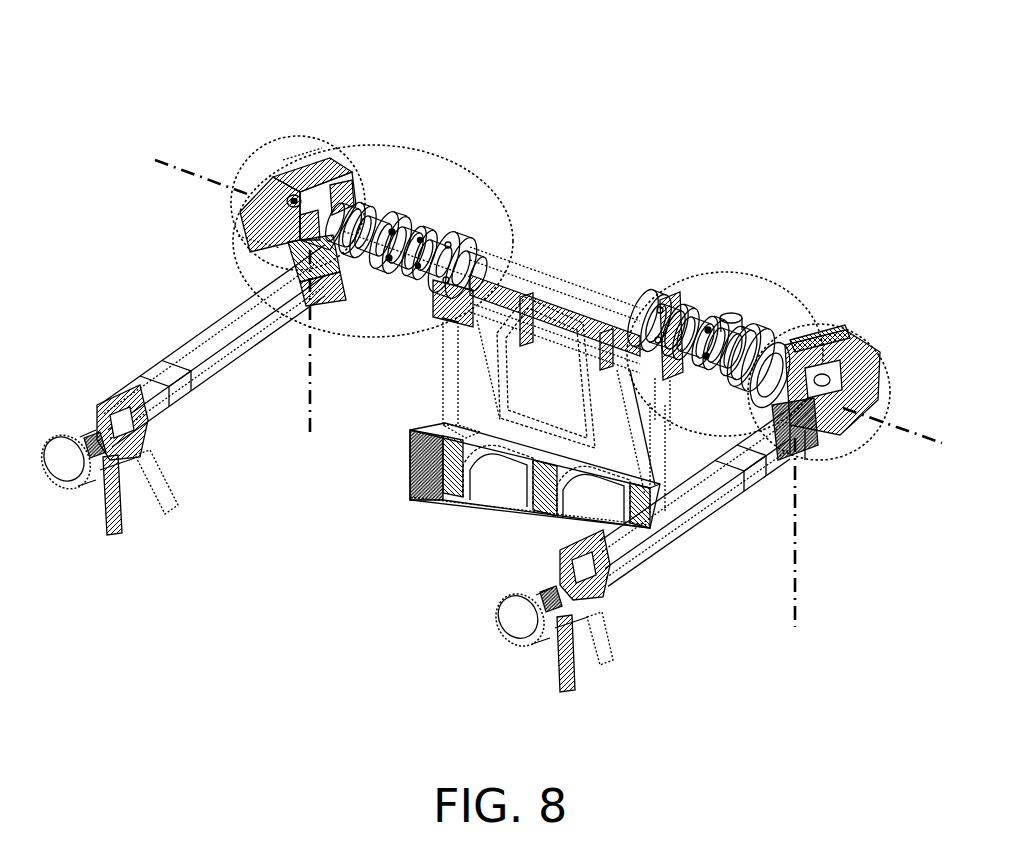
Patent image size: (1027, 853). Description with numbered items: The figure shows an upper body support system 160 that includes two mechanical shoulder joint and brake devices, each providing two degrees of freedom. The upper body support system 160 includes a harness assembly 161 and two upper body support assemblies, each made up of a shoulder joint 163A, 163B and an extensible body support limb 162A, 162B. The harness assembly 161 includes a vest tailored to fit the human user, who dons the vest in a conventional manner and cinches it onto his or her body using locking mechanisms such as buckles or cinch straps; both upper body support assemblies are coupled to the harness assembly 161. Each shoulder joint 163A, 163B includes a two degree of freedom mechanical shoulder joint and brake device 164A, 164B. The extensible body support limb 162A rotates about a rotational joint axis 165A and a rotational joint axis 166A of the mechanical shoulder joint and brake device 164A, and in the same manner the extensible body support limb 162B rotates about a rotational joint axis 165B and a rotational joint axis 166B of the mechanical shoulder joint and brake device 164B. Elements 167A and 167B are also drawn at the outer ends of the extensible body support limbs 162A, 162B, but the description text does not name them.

The upper body support system 160 is at (125, 56).
The harness assembly 161 is at (410, 470).
The extensible body support limb 162A is at (180, 350).
The extensible body support limb 162B is at (697, 507).
The shoulder joint 163A is at (509, 212).
The shoulder joint 163B is at (781, 289).
The mechanical shoulder joint and brake device 164A is at (313, 137).
The mechanical shoulder joint and brake device 164B is at (835, 460).
The rotational joint axis 165A is at (205, 178).
The rotational joint axis 165B is at (927, 438).
The rotational joint axis 166A is at (308, 388).
The rotational joint axis 166B is at (793, 580).
The first leg 167A is at (103, 510).
The second leg 167B is at (557, 668).